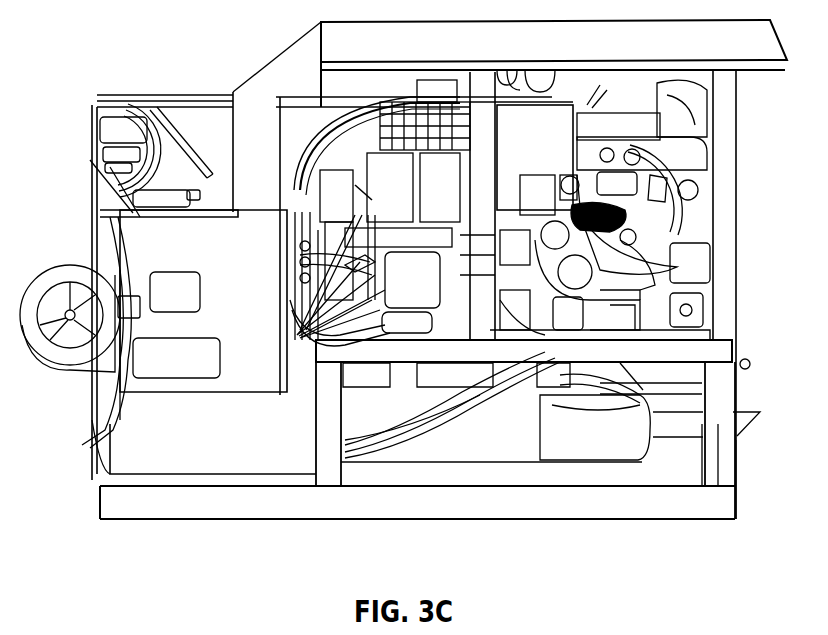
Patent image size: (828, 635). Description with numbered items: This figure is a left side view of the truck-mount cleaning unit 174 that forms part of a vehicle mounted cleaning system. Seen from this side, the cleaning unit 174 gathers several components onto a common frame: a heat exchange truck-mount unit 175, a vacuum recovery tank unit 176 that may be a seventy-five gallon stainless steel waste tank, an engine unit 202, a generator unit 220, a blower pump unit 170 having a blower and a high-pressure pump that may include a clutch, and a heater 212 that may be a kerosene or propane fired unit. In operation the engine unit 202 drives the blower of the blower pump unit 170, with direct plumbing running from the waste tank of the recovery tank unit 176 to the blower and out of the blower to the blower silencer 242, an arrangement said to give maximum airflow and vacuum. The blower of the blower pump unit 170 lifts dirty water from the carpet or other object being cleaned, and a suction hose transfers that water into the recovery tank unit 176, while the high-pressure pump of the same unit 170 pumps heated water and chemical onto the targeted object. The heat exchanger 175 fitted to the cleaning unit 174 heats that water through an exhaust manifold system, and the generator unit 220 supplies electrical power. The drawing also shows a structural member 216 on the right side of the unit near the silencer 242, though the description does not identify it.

The truck-mount cleaning unit 174 is at (172, 50).
The vacuum recovery tank unit 176 is at (219, 128).
The generator unit 220 is at (386, 178).
The heat exchange truck-mount unit 175 is at (70, 215).
The engine unit 202 is at (692, 212).
The heater 212 is at (263, 355).
The blower pump unit 170 is at (450, 310).
The blower silencer 242 is at (622, 437).
The support post 216 is at (718, 450).